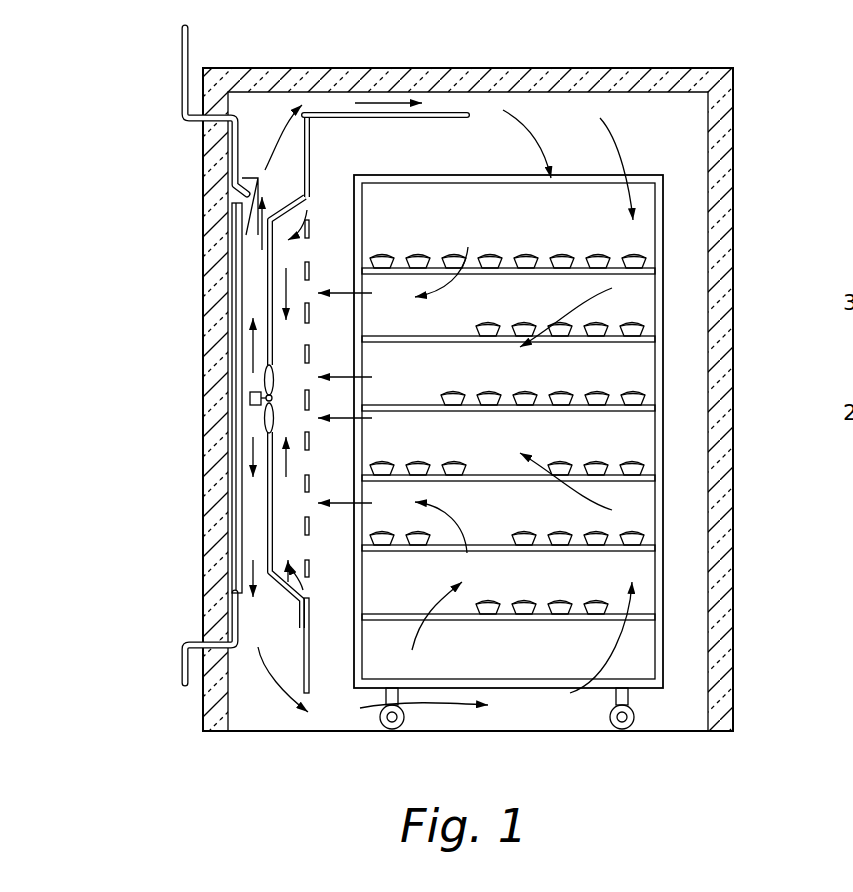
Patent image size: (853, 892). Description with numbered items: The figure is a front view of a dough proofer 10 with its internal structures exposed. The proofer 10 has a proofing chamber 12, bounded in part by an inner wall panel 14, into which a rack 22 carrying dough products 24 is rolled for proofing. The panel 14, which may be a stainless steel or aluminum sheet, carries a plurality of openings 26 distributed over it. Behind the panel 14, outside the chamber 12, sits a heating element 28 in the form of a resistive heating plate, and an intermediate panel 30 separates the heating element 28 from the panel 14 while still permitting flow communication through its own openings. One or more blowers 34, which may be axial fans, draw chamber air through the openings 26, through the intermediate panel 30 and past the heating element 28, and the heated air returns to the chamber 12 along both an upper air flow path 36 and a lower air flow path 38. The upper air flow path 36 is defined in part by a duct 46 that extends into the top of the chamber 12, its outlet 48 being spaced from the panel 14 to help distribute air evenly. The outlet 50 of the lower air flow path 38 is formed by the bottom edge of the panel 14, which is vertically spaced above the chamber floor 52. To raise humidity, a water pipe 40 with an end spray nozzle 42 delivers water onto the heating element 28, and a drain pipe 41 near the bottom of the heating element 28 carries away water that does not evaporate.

The proofer 10 is at (748, 110).
The proofing chamber 12 is at (683, 313).
The wall (panel) 14 is at (311, 150).
The rack 22 is at (663, 215).
The dough products 24 is at (527, 290).
The openings 26 is at (342, 245).
The heating element 28 is at (235, 284).
The intermediate panel 30 is at (272, 340).
The blowers 34 is at (250, 399).
The upper air flow path 36 is at (263, 153).
The lower air flow path 38 is at (253, 443).
The pipe 40 is at (180, 53).
The drain pipe 41 is at (182, 648).
The spray nozzle 42 is at (240, 199).
The duct 46 is at (418, 118).
The outlet 48 is at (470, 112).
The outlet 50 is at (303, 718).
The chamber floor 52 is at (573, 713).